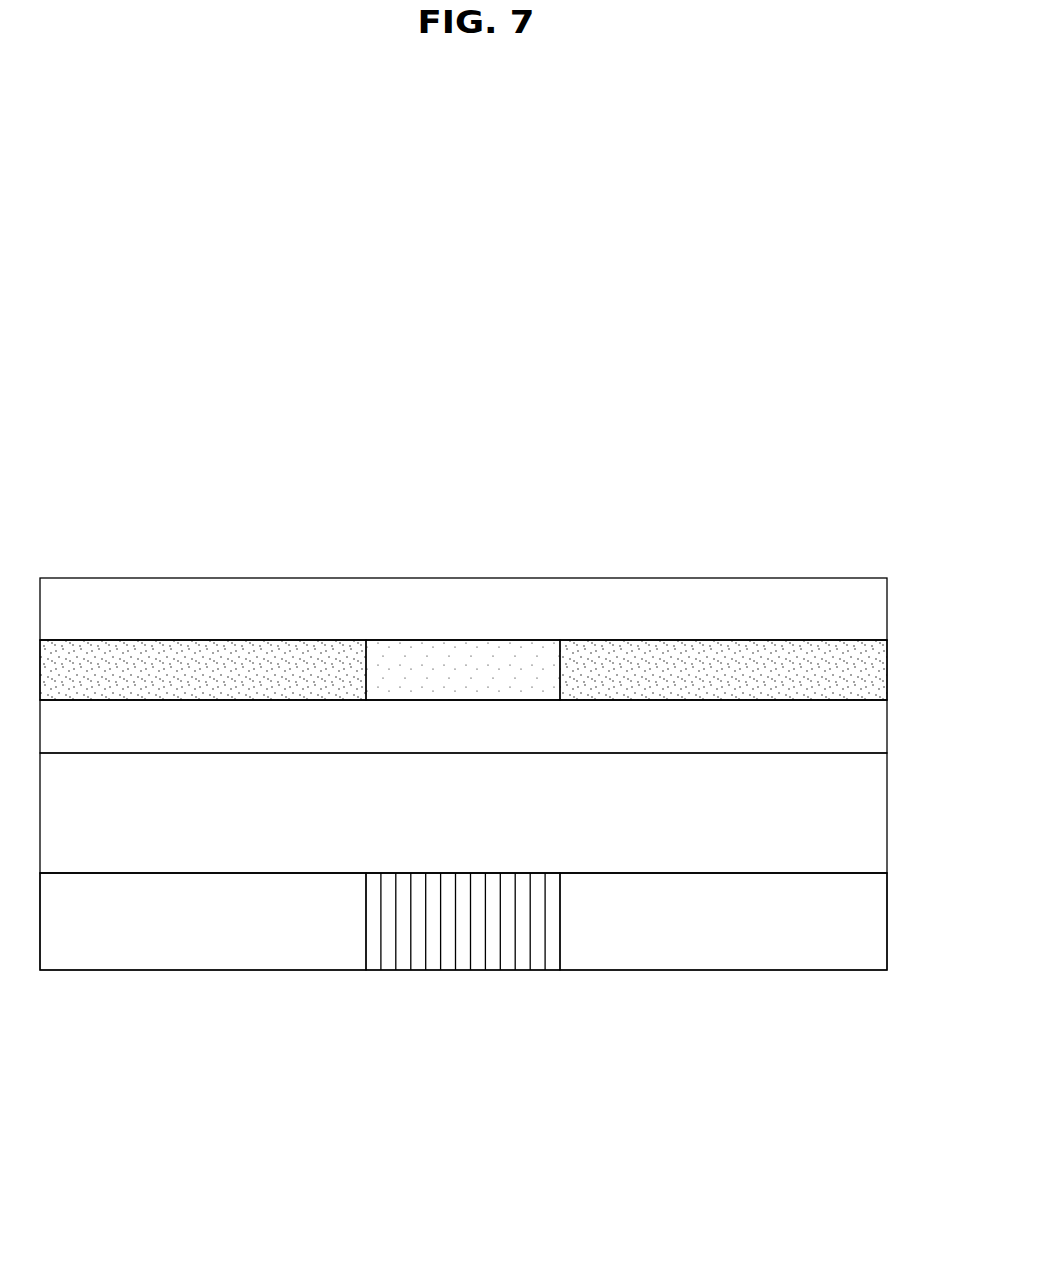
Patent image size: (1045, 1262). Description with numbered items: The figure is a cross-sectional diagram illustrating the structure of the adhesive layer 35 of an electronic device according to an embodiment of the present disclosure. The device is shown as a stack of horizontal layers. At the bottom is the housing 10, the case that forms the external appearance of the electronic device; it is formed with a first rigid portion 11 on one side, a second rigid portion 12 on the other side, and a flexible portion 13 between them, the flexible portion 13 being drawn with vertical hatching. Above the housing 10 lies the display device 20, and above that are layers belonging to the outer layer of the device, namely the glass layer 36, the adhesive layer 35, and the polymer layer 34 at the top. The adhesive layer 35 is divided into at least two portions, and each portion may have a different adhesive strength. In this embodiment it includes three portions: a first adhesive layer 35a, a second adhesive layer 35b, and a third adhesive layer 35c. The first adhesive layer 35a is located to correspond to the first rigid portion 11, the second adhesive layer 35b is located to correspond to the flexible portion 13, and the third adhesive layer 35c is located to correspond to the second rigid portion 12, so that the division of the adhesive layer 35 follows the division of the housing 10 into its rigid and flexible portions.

The housing 10 is at (463, 997).
The first rigid portion 11 is at (248, 945).
The second rigid portion 12 is at (723, 967).
The flexible portion 13 is at (466, 945).
The display device 20 is at (877, 817).
The polymer layer 34 is at (877, 603).
The adhesive layer 35 is at (463, 554).
The first adhesive layer 35a is at (228, 670).
The second adhesive layer 35b is at (472, 670).
The third adhesive layer 35c is at (723, 578).
The glass layer 36 is at (877, 718).